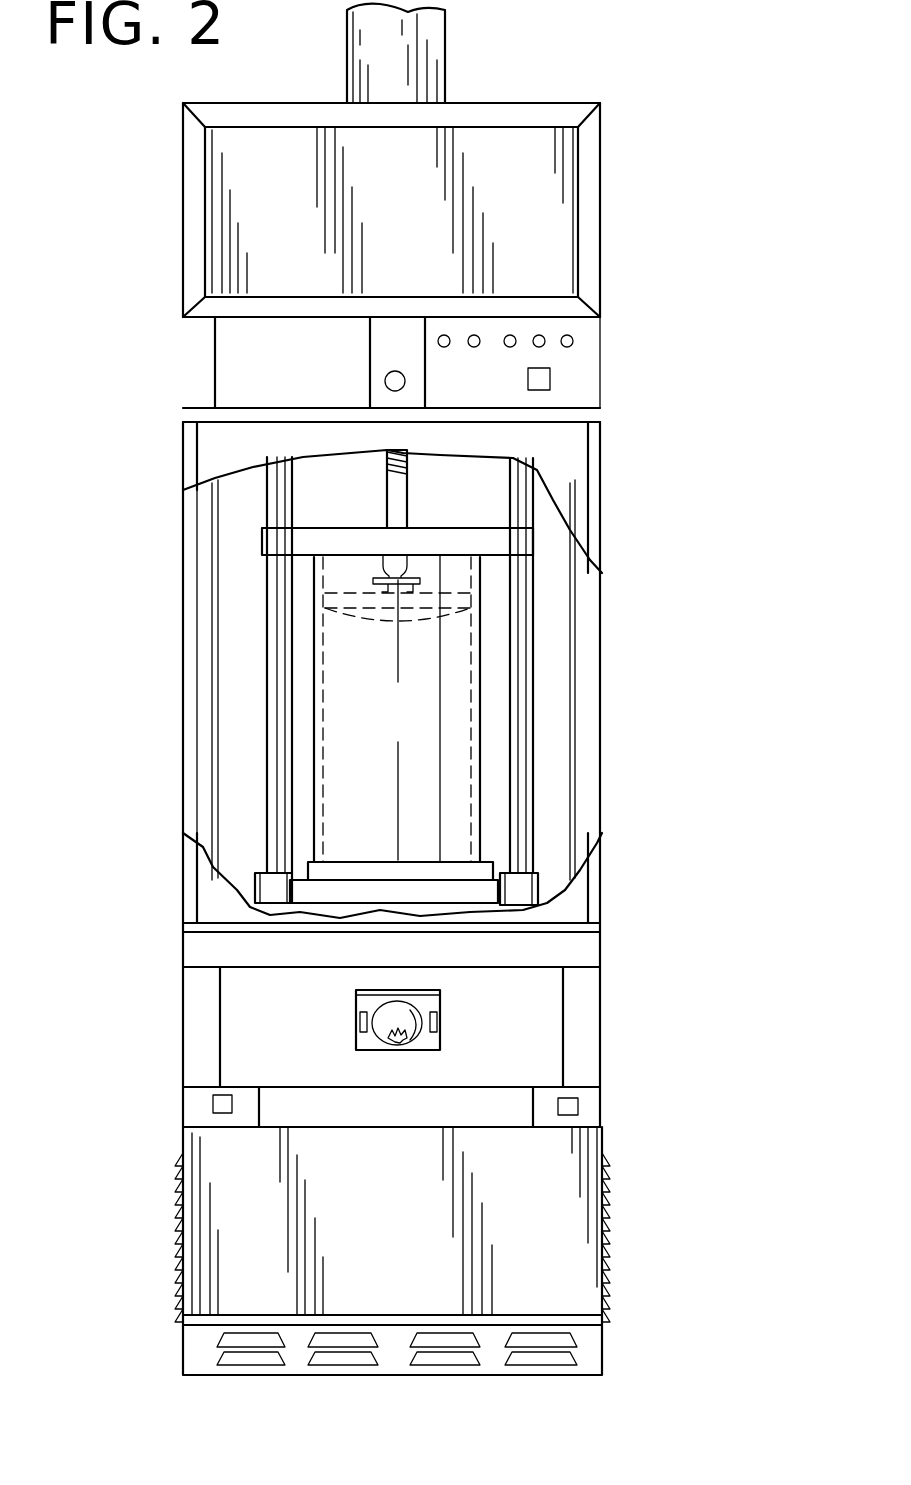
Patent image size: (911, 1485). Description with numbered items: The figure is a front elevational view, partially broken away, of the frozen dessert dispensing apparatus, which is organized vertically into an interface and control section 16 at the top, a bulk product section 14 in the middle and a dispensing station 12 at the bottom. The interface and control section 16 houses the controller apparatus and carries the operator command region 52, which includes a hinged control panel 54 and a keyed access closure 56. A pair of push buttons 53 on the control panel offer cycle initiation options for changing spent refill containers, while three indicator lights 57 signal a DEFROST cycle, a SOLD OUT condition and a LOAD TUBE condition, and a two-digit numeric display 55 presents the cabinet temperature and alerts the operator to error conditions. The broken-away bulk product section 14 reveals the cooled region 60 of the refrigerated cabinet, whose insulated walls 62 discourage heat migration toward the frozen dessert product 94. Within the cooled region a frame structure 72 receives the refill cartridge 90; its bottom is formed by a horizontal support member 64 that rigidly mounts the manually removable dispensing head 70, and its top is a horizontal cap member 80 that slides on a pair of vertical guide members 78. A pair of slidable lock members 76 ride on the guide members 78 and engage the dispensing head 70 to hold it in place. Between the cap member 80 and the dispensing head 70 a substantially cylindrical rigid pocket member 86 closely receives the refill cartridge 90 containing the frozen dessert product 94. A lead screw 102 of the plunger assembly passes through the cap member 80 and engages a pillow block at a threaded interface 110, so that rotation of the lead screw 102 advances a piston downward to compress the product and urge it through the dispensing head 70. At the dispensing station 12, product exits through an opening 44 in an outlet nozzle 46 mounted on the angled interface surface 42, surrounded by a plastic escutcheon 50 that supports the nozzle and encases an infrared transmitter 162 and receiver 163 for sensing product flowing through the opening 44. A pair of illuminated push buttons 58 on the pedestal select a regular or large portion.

The dispensing station 12 is at (135, 1377).
The bulk product section 14 is at (125, 962).
The interface and control section 16 is at (123, 422).
The interface surface 42 is at (317, 1050).
The opening 44 is at (397, 1043).
The outlet nozzle 46 is at (408, 1015).
The escutcheon 50 is at (427, 1042).
The operator command region 52 is at (579, 352).
The push buttons 53 is at (474, 335).
The control panel 54 is at (486, 384).
The numeric display 55 is at (550, 380).
The keyed access closure 56 is at (385, 378).
The indicator lights 57 is at (567, 335).
The illuminated push buttons 58 is at (223, 1103).
The cooled region 60 is at (237, 595).
The walls 62 is at (202, 632).
The horizontal support member 64 is at (345, 908).
The dispensing head 70 is at (478, 900).
The frame structure 72 is at (333, 525).
The lock members 76 is at (270, 882).
The guide members 78 is at (273, 718).
The cap member 80 is at (505, 540).
The pocket member 86 is at (483, 638).
The refill cartridge 90 is at (478, 712).
The frozen dessert product 94 is at (418, 728).
The lead screw 102 is at (393, 510).
The threaded interface 110 is at (410, 450).
The infrared transmitter 162 is at (358, 1020).
The infrared receiver 163 is at (442, 1018).